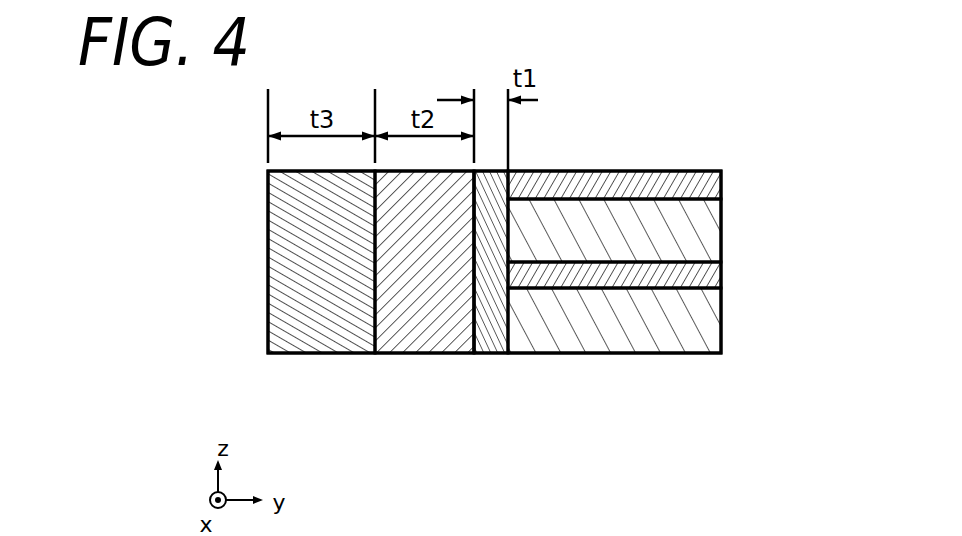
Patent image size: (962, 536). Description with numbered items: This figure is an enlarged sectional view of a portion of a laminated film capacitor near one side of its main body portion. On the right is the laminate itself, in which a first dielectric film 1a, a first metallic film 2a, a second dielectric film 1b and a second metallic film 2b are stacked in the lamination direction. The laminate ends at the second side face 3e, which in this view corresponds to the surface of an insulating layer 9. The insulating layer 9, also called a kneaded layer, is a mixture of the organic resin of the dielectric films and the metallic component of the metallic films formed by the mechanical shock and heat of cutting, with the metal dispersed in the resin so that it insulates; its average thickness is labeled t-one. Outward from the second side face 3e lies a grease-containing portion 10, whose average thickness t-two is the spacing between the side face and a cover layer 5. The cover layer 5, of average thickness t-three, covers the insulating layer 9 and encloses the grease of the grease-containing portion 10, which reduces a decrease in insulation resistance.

The first dielectric film 1a is at (630, 332).
The second dielectric film 1b is at (632, 232).
The first metallic film 2a is at (683, 282).
The second metallic film 2b is at (666, 183).
The second side face 3e is at (475, 362).
The cover layer 5 is at (311, 337).
The insulating layer 9 is at (490, 342).
The grease-containing portion 10 is at (421, 340).